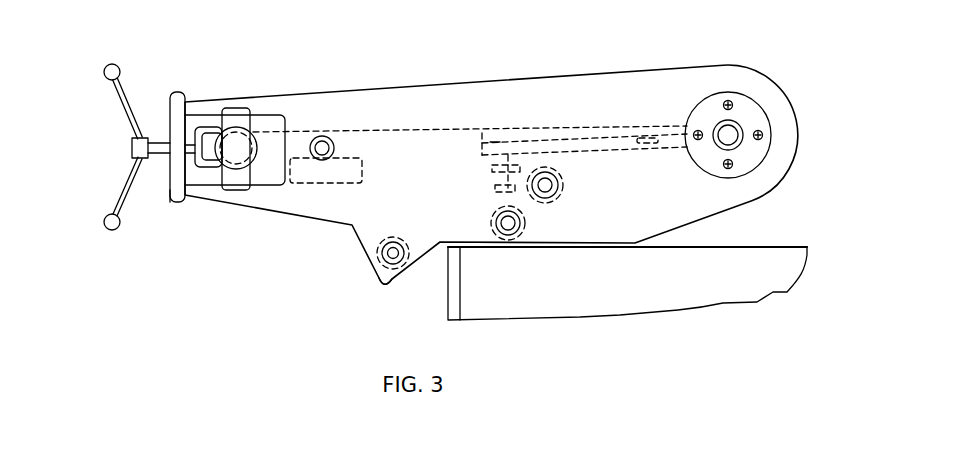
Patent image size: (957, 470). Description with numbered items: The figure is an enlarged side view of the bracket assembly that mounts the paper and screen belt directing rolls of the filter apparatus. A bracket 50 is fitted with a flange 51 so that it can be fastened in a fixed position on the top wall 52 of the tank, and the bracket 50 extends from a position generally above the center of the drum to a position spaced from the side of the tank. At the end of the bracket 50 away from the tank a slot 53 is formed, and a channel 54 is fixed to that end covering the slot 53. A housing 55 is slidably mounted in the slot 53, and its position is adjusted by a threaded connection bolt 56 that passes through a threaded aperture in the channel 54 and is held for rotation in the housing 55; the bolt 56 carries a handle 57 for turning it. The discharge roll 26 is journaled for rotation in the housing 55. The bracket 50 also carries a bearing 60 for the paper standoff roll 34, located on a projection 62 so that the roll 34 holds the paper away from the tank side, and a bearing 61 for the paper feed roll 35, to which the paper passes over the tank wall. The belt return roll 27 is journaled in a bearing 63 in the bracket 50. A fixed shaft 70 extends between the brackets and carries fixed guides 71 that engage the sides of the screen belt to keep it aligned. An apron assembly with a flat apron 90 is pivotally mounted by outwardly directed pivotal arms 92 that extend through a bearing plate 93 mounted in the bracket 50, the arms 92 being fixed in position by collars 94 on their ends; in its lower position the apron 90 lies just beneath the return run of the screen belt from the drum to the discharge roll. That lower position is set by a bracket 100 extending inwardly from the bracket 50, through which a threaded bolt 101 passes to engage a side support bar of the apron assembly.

The discharge roll 26 is at (247, 133).
The belt return roll 27 is at (558, 180).
The paper standoff roll 34 is at (383, 262).
The paper feed roll 35 is at (522, 222).
The bracket 50 is at (403, 85).
The flange 51 is at (533, 247).
The top wall 52 is at (717, 245).
The slot 53 is at (195, 118).
The channel 54 is at (182, 197).
The housing 55 is at (237, 115).
The threaded connection bolt 56 is at (160, 138).
The handle 57 is at (122, 193).
The bearing 60 is at (402, 258).
The bearing 61 is at (497, 213).
The projection 62 is at (390, 278).
The bearing 63 is at (557, 192).
The fixed shaft 70 is at (322, 138).
The fixed guide 71 is at (312, 190).
The apron 90 is at (495, 140).
The pivotal arm 92 is at (740, 132).
The bearing plate 93 is at (747, 110).
The collar 94 is at (722, 120).
The bracket 100 is at (490, 173).
The threaded bolt 101 is at (490, 187).